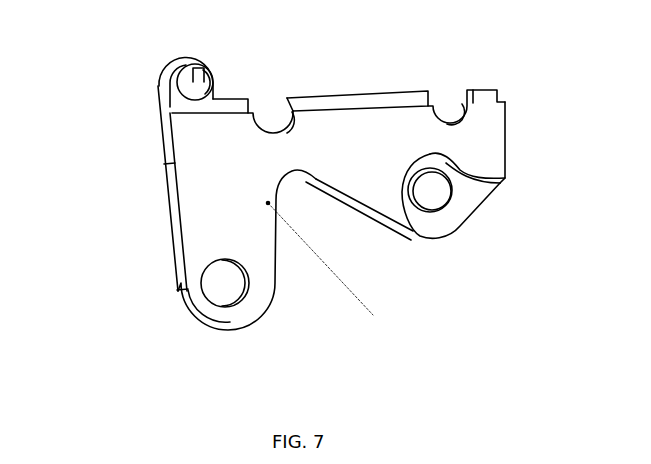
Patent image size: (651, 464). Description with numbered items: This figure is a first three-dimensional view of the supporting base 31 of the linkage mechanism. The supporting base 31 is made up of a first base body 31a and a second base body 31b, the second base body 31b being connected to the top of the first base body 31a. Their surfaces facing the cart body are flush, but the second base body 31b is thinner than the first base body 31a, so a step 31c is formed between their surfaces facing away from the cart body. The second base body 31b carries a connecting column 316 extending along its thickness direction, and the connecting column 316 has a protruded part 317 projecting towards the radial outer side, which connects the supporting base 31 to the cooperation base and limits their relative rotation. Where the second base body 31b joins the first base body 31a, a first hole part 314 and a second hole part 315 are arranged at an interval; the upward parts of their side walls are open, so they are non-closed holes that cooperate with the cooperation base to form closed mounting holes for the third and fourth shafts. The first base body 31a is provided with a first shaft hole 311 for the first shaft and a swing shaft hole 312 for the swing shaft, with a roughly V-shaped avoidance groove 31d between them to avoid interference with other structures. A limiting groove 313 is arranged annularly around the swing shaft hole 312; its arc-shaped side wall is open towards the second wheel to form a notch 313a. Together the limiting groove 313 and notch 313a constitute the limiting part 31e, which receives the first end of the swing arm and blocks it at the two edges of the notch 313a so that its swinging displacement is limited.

The supporting base 31 is at (152, 222).
The first shaft hole 311 is at (230, 287).
The swing shaft hole 312 is at (427, 195).
The limiting groove 313 is at (448, 167).
The notch 313a is at (472, 203).
The first hole part 314 is at (275, 116).
The second hole part 315 is at (448, 103).
The connecting column 316 is at (195, 87).
The protruded part 317 is at (198, 67).
The first base body 31a is at (346, 258).
The second base body 31b is at (364, 102).
The step 31c is at (170, 117).
The avoidance groove 31d is at (293, 265).
The limiting part 31e is at (488, 178).